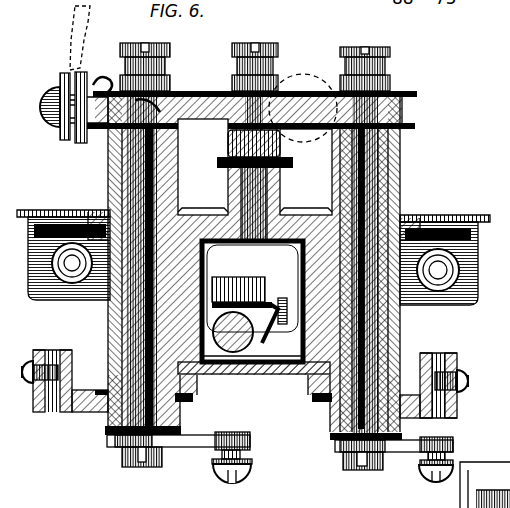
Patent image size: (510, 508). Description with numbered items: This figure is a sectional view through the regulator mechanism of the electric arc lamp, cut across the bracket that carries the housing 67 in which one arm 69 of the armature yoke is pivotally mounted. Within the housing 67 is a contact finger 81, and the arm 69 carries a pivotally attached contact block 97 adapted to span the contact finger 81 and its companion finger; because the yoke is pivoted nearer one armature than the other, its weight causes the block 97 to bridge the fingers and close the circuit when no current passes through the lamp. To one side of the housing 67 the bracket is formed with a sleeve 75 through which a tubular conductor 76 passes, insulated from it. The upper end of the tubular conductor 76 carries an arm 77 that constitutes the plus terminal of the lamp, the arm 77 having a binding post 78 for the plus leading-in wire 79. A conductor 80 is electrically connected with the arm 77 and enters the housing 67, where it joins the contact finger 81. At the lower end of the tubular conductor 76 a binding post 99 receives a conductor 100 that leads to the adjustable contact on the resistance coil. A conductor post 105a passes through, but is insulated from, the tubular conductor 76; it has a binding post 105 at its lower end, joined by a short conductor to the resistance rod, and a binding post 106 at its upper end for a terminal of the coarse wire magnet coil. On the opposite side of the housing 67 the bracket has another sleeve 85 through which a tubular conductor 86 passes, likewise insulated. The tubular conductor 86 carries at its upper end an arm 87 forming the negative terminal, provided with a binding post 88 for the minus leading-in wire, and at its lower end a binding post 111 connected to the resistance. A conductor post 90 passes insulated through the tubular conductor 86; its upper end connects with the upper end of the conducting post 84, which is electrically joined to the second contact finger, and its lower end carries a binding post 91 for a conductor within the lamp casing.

The housing 67 is at (300, 232).
The arm of armature yoke 69 is at (250, 345).
The sleeve 75 is at (108, 323).
The tubular conductor 76 is at (110, 305).
The arm 77 is at (106, 130).
The binding post 78 is at (60, 76).
The plus leading-in wire 79 is at (70, 28).
The conductor 80 is at (232, 192).
The contact finger 81 is at (282, 266).
The conducting post 84 is at (254, 48).
The sleeve 85 is at (400, 190).
The tubular conductor 86 is at (398, 146).
The arm 87 is at (207, 125).
The binding post 88 is at (302, 84).
The conductor post 90 is at (386, 160).
The binding post 91 is at (400, 452).
The contact block 97 is at (240, 292).
The binding post 99 is at (90, 412).
The conductor 100 is at (55, 402).
The binding post 105 is at (203, 450).
The conductor post 105a is at (180, 377).
The binding post 106 is at (148, 49).
The binding post 111 is at (440, 356).